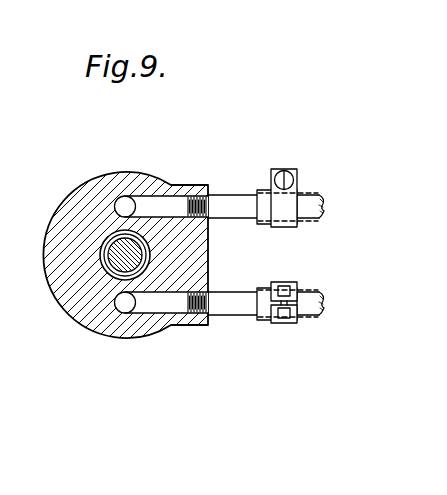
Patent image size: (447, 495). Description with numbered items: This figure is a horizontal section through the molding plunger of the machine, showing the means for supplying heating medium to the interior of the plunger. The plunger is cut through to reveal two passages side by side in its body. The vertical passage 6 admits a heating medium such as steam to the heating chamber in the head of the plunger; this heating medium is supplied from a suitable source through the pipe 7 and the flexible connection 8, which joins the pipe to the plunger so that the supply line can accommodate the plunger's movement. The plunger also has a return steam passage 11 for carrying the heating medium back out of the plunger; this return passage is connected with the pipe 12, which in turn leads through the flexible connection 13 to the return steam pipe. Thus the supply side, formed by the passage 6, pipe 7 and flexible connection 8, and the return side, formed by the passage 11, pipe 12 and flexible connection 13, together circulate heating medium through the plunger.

The vertical passage 6 is at (124, 204).
The pipe 7 is at (228, 195).
The flexible connection 8 is at (308, 190).
The return steam passage 11 is at (126, 304).
The pipe 12 is at (231, 315).
The flexible connection 13 is at (325, 318).